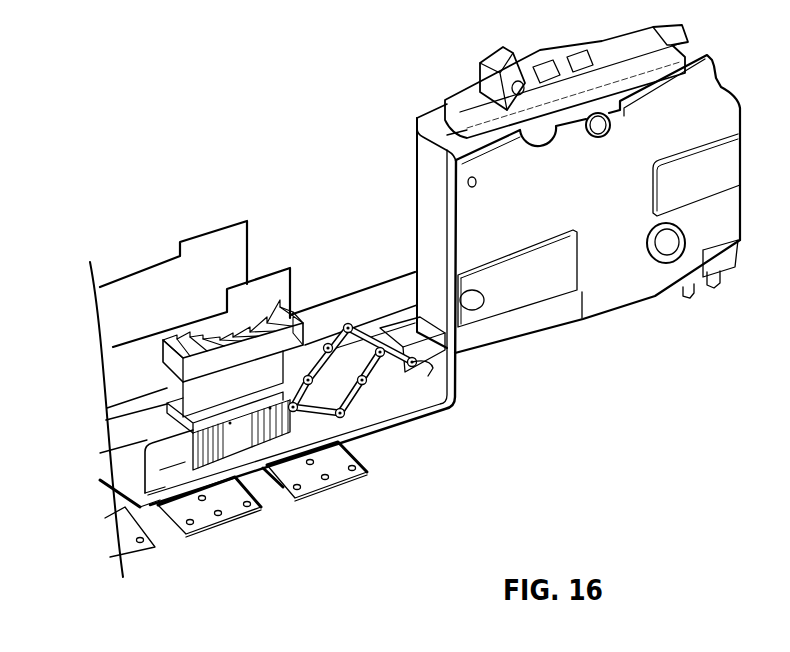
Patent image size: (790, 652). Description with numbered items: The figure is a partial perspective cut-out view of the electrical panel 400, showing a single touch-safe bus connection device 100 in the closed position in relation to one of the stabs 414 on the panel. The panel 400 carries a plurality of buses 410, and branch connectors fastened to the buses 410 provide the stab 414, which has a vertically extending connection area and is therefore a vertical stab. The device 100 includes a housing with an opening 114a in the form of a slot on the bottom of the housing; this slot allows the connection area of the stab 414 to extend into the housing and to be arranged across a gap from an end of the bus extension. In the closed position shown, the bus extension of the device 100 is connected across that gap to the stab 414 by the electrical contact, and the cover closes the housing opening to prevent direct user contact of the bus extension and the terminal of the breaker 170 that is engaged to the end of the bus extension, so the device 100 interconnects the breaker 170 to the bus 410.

The electrical panel 400 is at (229, 200).
The stab 414 is at (150, 458).
The opening 114a is at (180, 462).
The bus 410 is at (127, 547).
The touch-safe bus connection device 100 is at (347, 324).
The breaker 170 is at (472, 95).